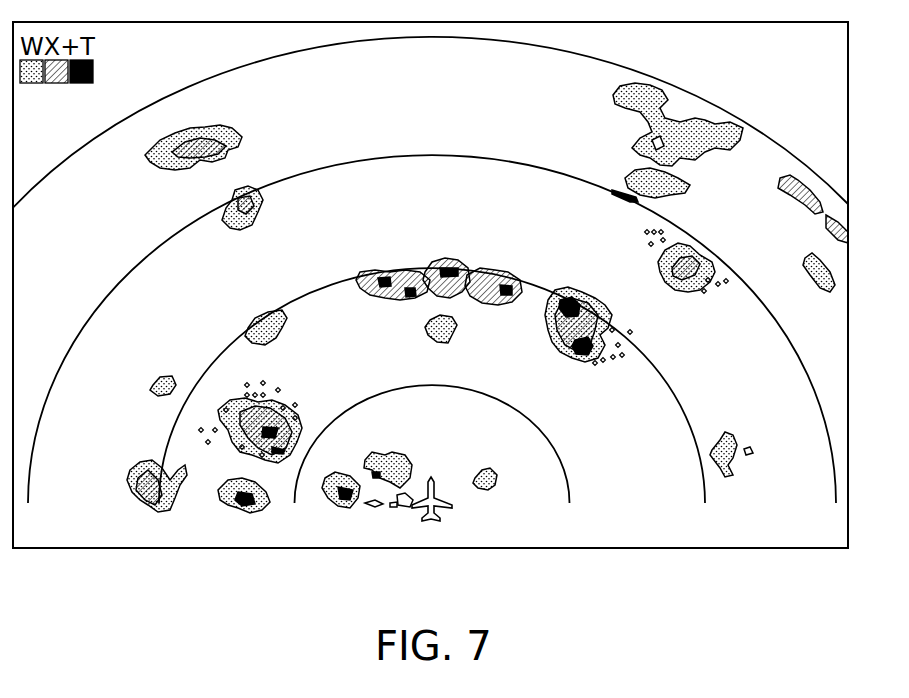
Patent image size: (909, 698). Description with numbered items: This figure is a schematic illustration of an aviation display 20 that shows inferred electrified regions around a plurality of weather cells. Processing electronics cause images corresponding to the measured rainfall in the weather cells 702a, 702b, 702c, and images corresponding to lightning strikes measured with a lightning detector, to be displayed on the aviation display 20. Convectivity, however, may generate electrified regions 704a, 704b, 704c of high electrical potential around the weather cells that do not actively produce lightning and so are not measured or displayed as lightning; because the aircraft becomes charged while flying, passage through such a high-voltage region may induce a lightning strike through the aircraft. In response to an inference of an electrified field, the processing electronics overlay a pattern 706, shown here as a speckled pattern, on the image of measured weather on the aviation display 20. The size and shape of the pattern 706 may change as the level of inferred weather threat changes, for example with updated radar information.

The aviation display 20 is at (83, 550).
The weather cell 702a is at (273, 463).
The weather cell 702b is at (583, 364).
The weather cell 702c is at (679, 283).
The electrified region 704a is at (218, 441).
The electrified region 704b is at (613, 364).
The electrified region 704c is at (645, 238).
The pattern 706 is at (199, 431).